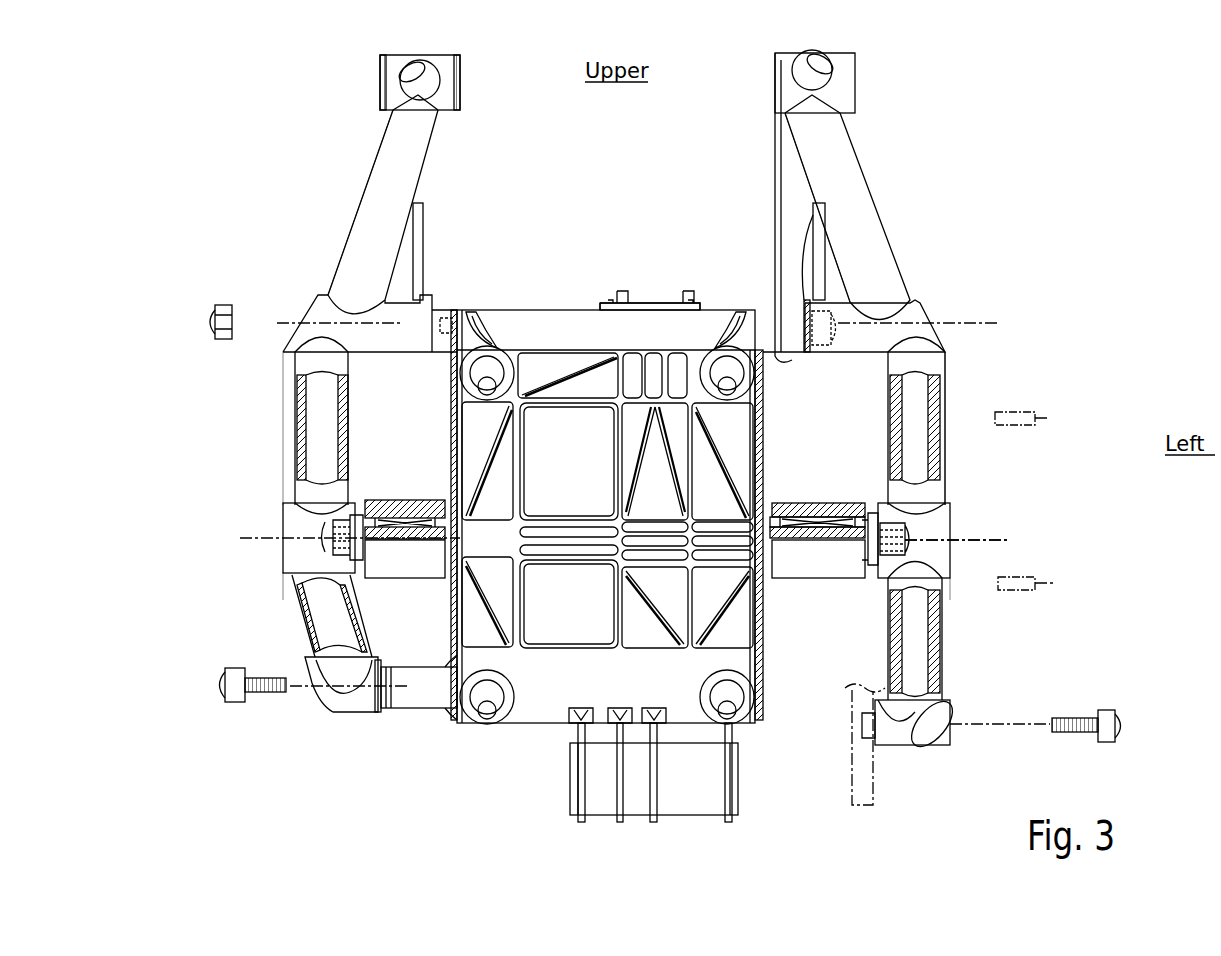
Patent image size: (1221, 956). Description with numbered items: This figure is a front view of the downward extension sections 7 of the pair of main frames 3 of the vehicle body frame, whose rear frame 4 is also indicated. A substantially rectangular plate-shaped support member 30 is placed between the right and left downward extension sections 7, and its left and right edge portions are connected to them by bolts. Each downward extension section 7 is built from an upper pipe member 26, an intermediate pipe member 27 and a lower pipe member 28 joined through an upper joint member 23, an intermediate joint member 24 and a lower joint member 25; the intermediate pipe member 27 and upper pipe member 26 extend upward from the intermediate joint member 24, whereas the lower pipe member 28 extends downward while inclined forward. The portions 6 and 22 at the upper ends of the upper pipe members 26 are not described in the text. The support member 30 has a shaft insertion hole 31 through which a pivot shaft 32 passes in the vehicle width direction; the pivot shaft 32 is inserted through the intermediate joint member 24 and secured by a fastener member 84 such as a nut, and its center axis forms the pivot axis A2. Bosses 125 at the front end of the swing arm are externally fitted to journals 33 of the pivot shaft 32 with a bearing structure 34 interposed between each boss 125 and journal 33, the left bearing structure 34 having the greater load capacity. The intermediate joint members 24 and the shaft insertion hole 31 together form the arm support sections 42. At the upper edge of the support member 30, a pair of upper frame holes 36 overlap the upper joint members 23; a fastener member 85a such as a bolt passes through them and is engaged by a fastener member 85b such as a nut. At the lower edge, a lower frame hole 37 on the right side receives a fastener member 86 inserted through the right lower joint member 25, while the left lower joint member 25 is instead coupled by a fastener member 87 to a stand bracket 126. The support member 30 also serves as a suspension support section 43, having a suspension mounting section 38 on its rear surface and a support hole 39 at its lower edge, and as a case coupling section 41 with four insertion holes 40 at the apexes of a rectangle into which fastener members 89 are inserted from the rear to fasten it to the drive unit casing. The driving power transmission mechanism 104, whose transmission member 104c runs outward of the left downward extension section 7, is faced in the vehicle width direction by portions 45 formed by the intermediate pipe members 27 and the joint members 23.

The main frame 3 is at (378, 78).
The rear frame 4 is at (775, 120).
The upper bracket 6 is at (385, 68).
The downward extension section 7 is at (395, 138).
The boss 22 is at (438, 66).
The upper joint member 23 is at (975, 290).
The intermediate joint member 24 is at (290, 508).
The lower joint member 25 is at (335, 718).
The upper pipe member 26 is at (380, 193).
The intermediate pipe member 27 is at (320, 398).
The lower pipe member 28 is at (320, 618).
The support member 30 is at (530, 715).
The shaft insertion hole 31 is at (570, 520).
The pivot shaft 32 is at (780, 500).
The journal 33 is at (430, 500).
The bearing structure 34 is at (815, 527).
The upper frame hole 36 is at (478, 330).
The lower frame hole 37 is at (416, 710).
The suspension mounting section 38 is at (623, 303).
The support hole 39 is at (700, 800).
The insertion hole 40 is at (490, 348).
The case coupling section 41 is at (448, 383).
The arm support section 42 is at (260, 565).
The suspension support section 43 is at (650, 300).
The portion facing the driving power transmission mechanism 45 is at (280, 495).
The fastener member 84 is at (330, 530).
The fastener member 85a is at (835, 330).
The fastener member 85b is at (222, 305).
The fastener member 86 is at (232, 705).
The fastener member 87 is at (1108, 710).
The fastener member 89 is at (497, 348).
The driving power transmission mechanism 104 is at (1035, 410).
The transmission member 104c is at (1048, 418).
The boss 125 is at (408, 560).
The stand bracket 126 is at (873, 785).
The pivot axis A2 is at (981, 509).